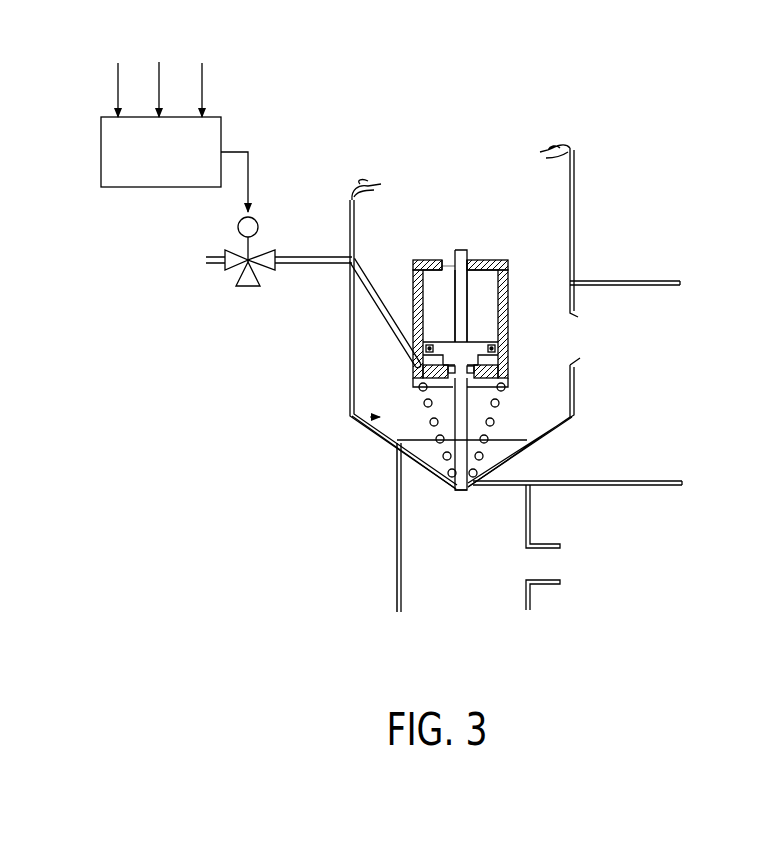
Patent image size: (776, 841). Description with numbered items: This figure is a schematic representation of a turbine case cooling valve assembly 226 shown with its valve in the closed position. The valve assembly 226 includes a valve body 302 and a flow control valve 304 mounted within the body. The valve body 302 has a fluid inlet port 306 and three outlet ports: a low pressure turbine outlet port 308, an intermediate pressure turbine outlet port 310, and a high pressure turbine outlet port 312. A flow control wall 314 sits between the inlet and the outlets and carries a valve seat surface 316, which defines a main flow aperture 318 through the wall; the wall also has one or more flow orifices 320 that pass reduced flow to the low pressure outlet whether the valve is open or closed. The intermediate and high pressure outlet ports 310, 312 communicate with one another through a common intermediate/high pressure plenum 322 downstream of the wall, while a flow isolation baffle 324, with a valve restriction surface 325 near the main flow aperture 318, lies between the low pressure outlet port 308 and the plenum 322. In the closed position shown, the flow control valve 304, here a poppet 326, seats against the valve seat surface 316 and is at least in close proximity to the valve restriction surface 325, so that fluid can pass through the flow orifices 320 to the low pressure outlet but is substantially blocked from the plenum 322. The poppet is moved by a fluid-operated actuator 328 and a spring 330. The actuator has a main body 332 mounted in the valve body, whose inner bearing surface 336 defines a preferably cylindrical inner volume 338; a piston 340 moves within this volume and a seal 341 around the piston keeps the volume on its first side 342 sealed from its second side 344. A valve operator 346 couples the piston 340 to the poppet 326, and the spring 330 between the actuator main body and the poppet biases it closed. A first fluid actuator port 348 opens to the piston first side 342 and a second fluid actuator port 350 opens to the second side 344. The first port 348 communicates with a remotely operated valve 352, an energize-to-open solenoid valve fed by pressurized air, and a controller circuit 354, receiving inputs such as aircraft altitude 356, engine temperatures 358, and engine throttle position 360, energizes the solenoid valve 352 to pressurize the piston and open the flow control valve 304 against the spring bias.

The valve assembly 226 is at (337, 138).
The valve body 302 is at (607, 227).
The flow control valve 304 is at (351, 420).
The fluid inlet port 306 is at (474, 247).
The low pressure turbine outlet port 308 is at (653, 378).
The intermediate pressure turbine outlet port 310 is at (547, 567).
The high pressure turbine outlet port 312 is at (486, 596).
The flow control wall 314 is at (553, 443).
The valve seat surface 316 is at (532, 441).
The main flow aperture 318 is at (530, 487).
The flow orifices 320 is at (578, 315).
The intermediate/high pressure plenum 322 is at (408, 567).
The flow isolation baffle 324 is at (504, 486).
The valve restriction surface 325 is at (477, 492).
The poppet 326 is at (398, 472).
The fluid-operated actuator 328 is at (487, 248).
The spring 330 is at (428, 403).
The actuator main body 332 is at (508, 315).
The inner bearing surface 336 is at (467, 272).
The inner volume 338 is at (430, 290).
The piston 340 is at (455, 350).
The seal 341 is at (503, 345).
The first side 342 is at (503, 360).
The second side 344 is at (478, 285).
The valve operator 346 is at (433, 420).
The first fluid actuator port 348 is at (422, 366).
The second fluid actuator port 350 is at (447, 260).
The remotely operated valve 352 is at (225, 250).
The controller circuit 354 is at (223, 133).
The aircraft altitude 356 is at (115, 83).
The engine temperatures 358 is at (162, 73).
The engine throttle position 360 is at (203, 85).